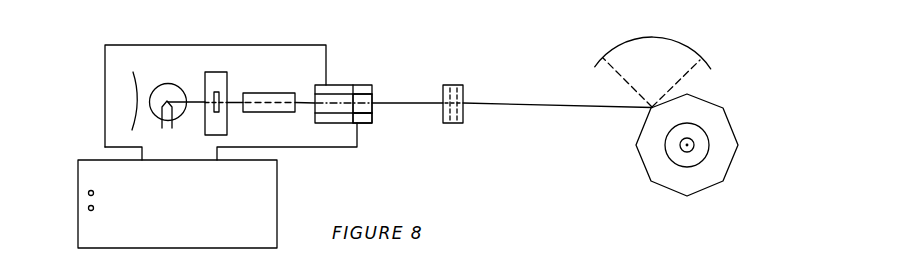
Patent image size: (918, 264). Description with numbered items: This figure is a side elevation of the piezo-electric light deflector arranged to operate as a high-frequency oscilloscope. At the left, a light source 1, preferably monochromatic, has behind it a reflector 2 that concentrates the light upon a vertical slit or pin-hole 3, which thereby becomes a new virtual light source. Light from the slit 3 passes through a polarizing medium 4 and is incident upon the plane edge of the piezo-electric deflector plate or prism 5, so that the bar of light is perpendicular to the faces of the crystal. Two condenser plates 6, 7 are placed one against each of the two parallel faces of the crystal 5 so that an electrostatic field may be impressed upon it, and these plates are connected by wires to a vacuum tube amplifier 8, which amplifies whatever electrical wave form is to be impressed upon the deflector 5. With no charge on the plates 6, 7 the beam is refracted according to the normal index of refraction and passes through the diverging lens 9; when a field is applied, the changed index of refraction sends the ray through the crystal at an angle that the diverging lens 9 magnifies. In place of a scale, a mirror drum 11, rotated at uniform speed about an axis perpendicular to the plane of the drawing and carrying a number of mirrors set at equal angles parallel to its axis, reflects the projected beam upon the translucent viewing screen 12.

The light source 1 is at (173, 68).
The reflector 2 is at (120, 92).
The vertical slit or pin-hole 3 is at (221, 100).
The polarizing medium 4 is at (285, 92).
The piezo-electric deflector plate or prism 5 is at (374, 100).
The condenser plate 6 is at (341, 84).
The condenser plate 7 is at (363, 124).
The vacuum tube amplifier 8 is at (177, 204).
The diverging lens 9 is at (458, 85).
The mirror drum 11 is at (647, 173).
The translucent viewing screen 12 is at (624, 42).